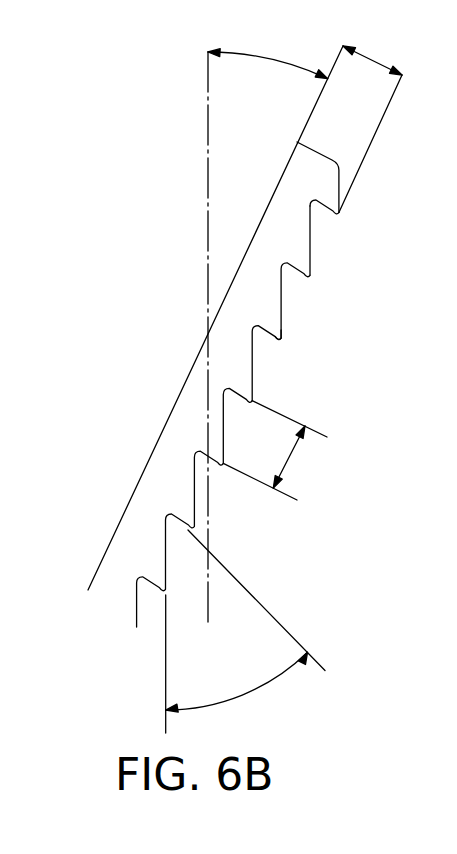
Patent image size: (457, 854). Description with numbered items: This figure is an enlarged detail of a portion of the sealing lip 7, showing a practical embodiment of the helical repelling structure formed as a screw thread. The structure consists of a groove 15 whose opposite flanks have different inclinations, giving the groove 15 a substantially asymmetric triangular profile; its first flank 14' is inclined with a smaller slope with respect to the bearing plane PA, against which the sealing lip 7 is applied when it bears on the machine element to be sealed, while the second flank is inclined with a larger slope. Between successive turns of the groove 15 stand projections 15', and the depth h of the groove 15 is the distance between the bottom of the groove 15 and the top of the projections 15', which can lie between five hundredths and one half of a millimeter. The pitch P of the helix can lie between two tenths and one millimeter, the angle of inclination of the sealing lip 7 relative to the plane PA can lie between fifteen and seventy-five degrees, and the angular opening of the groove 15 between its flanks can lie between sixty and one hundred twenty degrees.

The sealing lip 7 is at (165, 447).
The first flank 14' is at (354, 237).
The groove 15 is at (293, 384).
The projections 15' is at (340, 355).
The bearing plane PA is at (207, 193).
The depth of the groove h is at (370, 119).
The pitch of the helix P is at (275, 450).